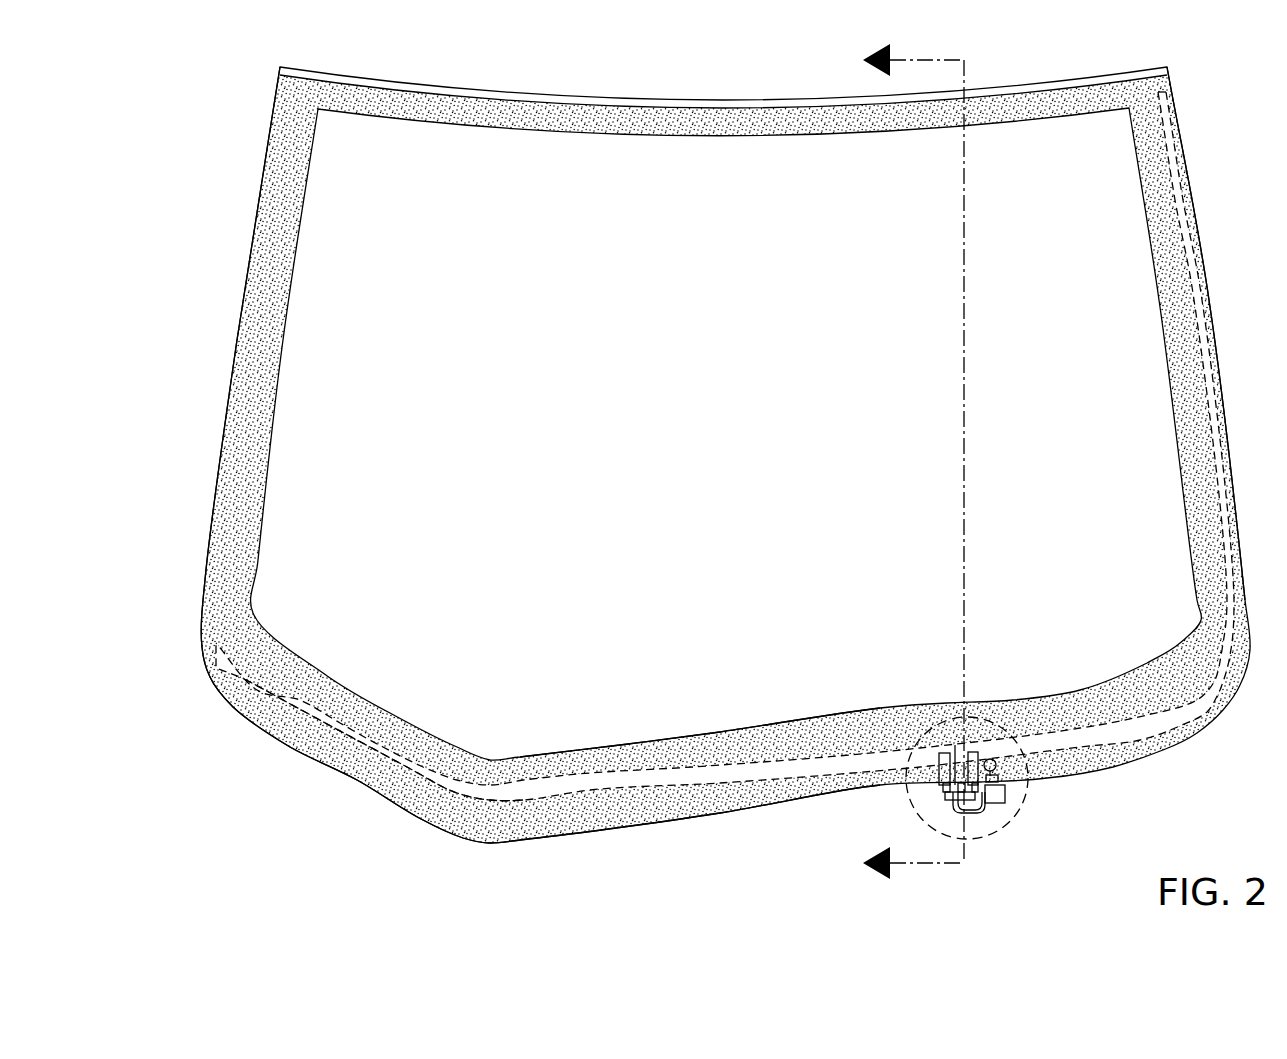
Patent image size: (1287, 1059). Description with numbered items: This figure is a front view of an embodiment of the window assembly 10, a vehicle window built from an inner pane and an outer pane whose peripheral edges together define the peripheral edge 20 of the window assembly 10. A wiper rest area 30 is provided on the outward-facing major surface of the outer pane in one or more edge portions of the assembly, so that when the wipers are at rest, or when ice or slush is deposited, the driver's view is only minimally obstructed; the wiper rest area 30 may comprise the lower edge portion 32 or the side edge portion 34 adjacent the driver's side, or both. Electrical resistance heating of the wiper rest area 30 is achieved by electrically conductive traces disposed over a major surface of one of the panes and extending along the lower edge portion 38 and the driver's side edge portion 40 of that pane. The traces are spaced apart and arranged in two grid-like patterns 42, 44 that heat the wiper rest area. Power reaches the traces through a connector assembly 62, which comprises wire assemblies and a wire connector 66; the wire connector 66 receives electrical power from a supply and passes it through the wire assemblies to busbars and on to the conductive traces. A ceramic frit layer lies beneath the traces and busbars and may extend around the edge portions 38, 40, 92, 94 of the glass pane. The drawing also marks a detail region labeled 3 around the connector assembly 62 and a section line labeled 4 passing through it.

The window assembly 10 is at (213, 176).
The peripheral edge 20 is at (222, 440).
The wiper rest area 30 is at (630, 720).
The lower edge portion 32 is at (540, 798).
The side edge portion 34 is at (1193, 199).
The lower edge portion 38 is at (255, 690).
The driver's side edge portion 40 is at (1209, 383).
The grid-like pattern 42 is at (327, 716).
The grid-like pattern 44 is at (1210, 248).
The connector assembly 62 is at (945, 802).
The wire connector 66 is at (997, 805).
The edge portion 92 is at (243, 380).
The edge portion 94 is at (620, 118).
The detail view circle 3 is at (1024, 802).
The section line 4 is at (913, 469).